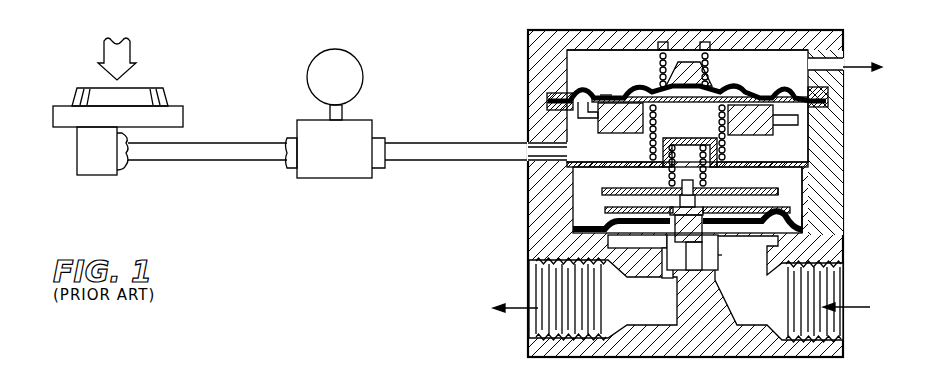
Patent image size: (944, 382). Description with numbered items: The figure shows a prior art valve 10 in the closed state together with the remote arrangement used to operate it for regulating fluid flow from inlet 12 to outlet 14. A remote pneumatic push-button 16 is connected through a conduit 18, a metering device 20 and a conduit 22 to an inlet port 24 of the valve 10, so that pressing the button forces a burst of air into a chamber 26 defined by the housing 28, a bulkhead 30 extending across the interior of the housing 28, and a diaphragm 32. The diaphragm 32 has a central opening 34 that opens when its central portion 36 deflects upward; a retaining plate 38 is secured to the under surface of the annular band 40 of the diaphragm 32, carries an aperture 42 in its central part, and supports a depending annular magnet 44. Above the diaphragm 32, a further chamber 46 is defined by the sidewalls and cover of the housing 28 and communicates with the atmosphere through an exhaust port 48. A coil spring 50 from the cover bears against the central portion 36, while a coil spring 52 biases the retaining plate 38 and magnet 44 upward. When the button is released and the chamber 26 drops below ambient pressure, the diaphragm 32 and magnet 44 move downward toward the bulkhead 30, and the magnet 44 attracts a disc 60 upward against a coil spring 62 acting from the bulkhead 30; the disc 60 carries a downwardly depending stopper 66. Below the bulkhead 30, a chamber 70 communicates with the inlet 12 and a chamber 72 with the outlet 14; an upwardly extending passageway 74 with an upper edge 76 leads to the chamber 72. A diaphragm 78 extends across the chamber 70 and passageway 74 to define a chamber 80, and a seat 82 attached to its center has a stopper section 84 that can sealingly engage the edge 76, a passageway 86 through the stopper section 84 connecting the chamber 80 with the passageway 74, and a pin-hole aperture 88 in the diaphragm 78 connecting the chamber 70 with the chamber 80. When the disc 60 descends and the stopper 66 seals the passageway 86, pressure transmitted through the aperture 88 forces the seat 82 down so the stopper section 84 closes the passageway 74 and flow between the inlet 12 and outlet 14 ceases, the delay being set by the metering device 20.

The valve 10 is at (662, 197).
The inlet 12 is at (828, 272).
The outlet 14 is at (530, 267).
The pneumatic push-button 16 is at (183, 116).
The conduit 18 is at (199, 166).
The metering device 20 is at (325, 186).
The conduit 22 is at (450, 143).
The inlet port 24 is at (522, 145).
The chamber 26 is at (800, 145).
The housing 28 is at (827, 115).
The bulkhead 30 is at (807, 160).
The diaphragm 32 is at (742, 92).
The central opening 34 is at (676, 64).
The central portion 36 is at (653, 80).
The retaining plate 38 is at (617, 87).
The annular band 40 is at (620, 84).
The aperture 42 is at (655, 106).
The annular magnet 44 is at (753, 125).
The chamber 46 is at (815, 30).
The exhaust port 48 is at (825, 58).
The coil spring 50 is at (712, 62).
The coil spring 52 is at (650, 137).
The disc 60 is at (743, 181).
The coil spring 62 is at (675, 181).
The stopper 66 is at (692, 118).
The chamber 70 is at (758, 286).
The chamber 72 is at (637, 325).
The passageway 74 is at (715, 262).
The upper edge 76 is at (658, 262).
The diaphragm 78 is at (583, 220).
The chamber 80 is at (793, 187).
The seat 82 is at (650, 217).
The stopper section 84 is at (705, 234).
The passageway 86 is at (692, 238).
The aperture 88 is at (810, 220).